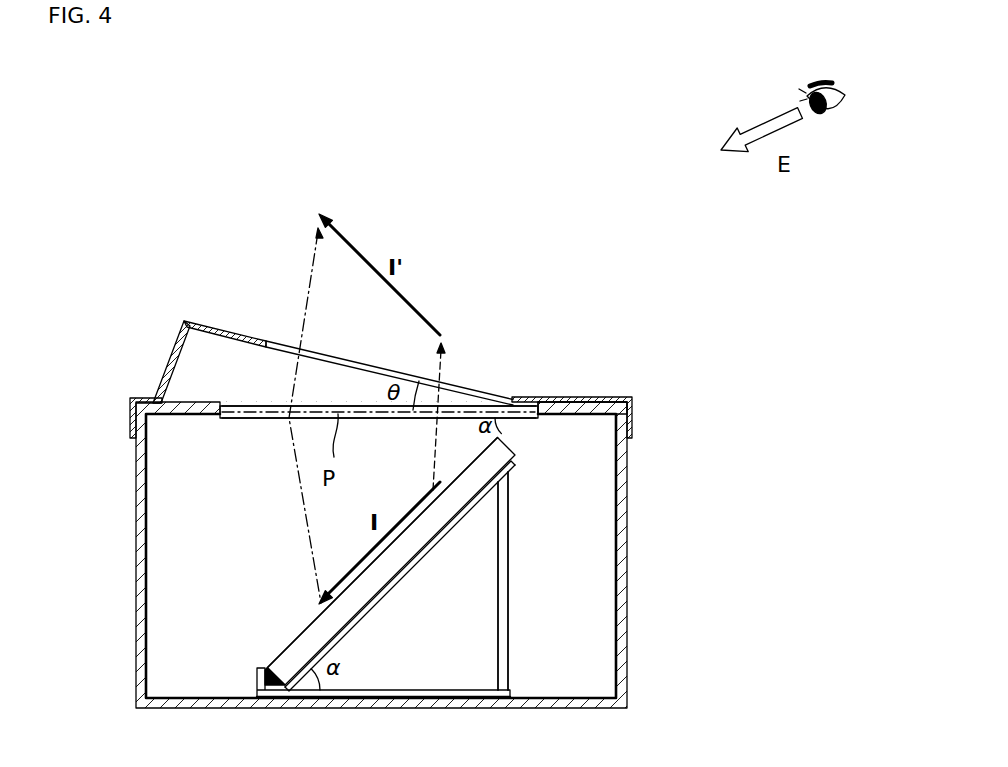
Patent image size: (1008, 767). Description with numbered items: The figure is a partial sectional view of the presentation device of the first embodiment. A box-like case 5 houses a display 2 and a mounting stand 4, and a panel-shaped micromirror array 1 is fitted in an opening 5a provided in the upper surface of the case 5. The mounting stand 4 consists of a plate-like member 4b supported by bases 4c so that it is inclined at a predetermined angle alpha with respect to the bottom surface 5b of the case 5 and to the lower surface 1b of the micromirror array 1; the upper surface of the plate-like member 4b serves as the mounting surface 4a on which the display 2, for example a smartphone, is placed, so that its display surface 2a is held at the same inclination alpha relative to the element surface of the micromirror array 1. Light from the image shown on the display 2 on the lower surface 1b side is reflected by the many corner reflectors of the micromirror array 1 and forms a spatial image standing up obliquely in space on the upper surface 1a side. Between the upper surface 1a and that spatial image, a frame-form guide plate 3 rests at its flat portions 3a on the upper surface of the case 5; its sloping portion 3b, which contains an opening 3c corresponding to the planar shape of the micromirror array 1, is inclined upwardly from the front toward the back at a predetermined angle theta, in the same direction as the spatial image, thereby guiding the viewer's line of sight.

The micromirror array 1 is at (369, 357).
The upper surface 1a is at (238, 405).
The lower surface 1b is at (237, 420).
The display 2 is at (361, 562).
The display surface 2a is at (283, 642).
The guide plate 3 is at (382, 342).
The flat portions 3a is at (147, 400).
The sloping portion 3b is at (215, 328).
The opening 3c is at (257, 344).
The mounting stand 4 is at (413, 579).
The mounting surface 4a is at (384, 575).
The plate-like member 4b is at (415, 562).
The bases 4c is at (508, 575).
The case 5 is at (643, 585).
The opening 5a is at (528, 400).
The bottom surface 5b is at (563, 697).